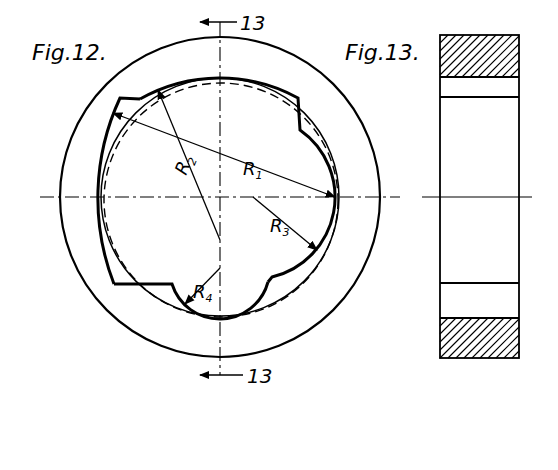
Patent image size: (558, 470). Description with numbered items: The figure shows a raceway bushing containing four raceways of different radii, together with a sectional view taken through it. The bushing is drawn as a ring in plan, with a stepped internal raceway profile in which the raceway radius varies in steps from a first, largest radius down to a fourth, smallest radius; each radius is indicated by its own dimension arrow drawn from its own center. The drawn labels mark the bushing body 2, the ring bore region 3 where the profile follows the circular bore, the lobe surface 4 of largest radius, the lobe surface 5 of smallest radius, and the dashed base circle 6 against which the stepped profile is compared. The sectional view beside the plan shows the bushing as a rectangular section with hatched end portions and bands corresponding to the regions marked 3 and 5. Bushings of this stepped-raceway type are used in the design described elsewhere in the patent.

In FIG. 12, the rotor / cam body 2 is at (326, 237).
In FIG. 13, the rotor / cam body 2 is at (512, 173).
In FIG. 12, the ring bore 3 is at (241, 78).
In FIG. 13, the ring bore 3 is at (512, 87).
In FIG. 12, the large-radius lobe surface 4 is at (107, 137).
In FIG. 12, the small-radius lobe surface 5 is at (266, 292).
In FIG. 13, the small-radius lobe surface 5 is at (517, 302).
In FIG. 12, the clearance circle 6 is at (316, 127).